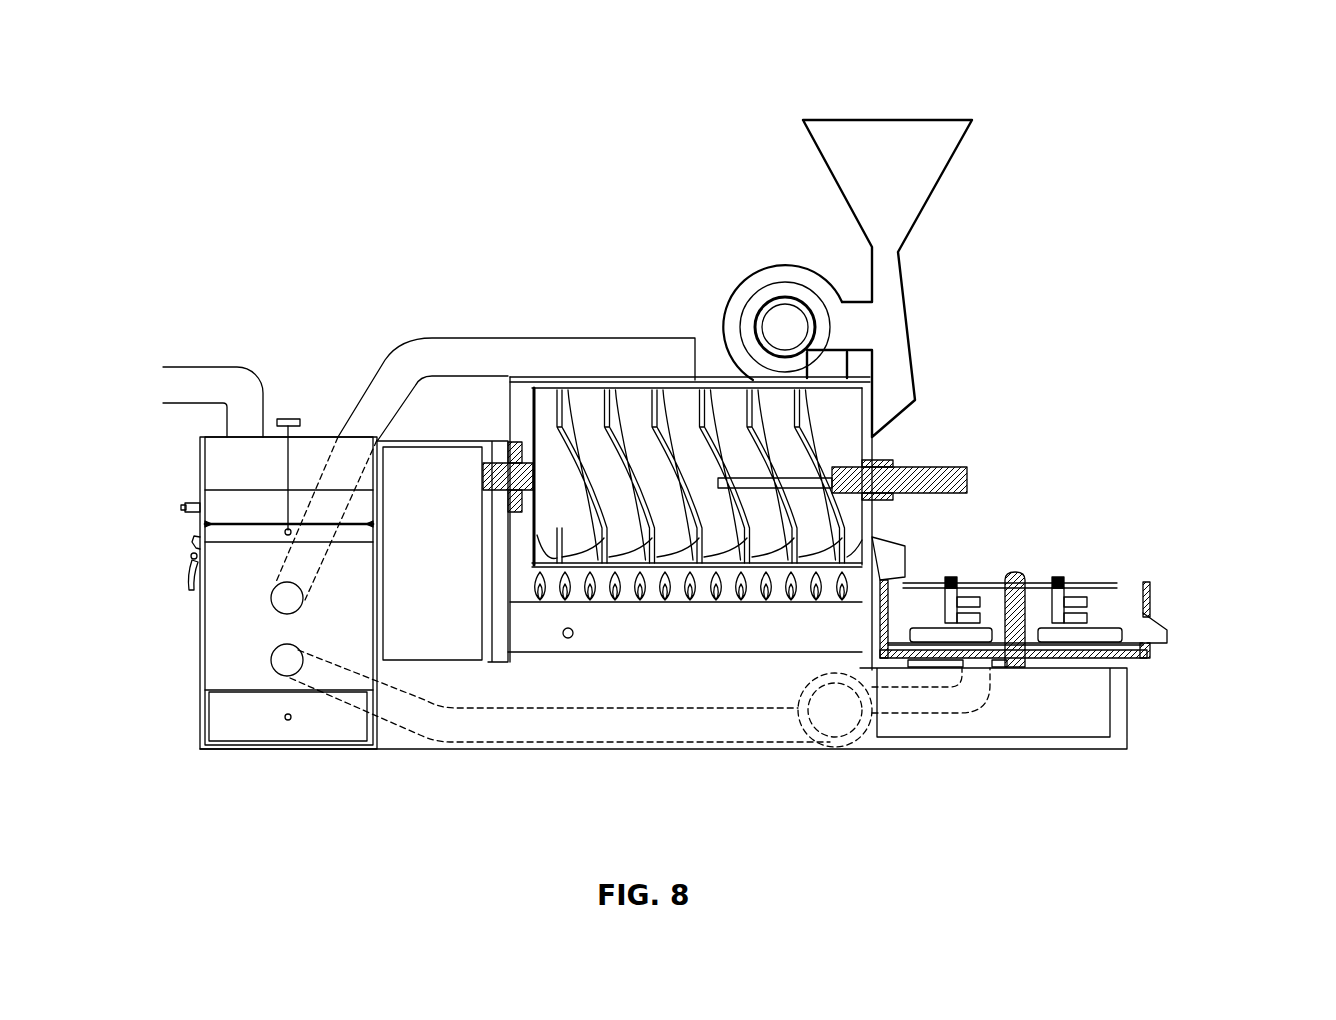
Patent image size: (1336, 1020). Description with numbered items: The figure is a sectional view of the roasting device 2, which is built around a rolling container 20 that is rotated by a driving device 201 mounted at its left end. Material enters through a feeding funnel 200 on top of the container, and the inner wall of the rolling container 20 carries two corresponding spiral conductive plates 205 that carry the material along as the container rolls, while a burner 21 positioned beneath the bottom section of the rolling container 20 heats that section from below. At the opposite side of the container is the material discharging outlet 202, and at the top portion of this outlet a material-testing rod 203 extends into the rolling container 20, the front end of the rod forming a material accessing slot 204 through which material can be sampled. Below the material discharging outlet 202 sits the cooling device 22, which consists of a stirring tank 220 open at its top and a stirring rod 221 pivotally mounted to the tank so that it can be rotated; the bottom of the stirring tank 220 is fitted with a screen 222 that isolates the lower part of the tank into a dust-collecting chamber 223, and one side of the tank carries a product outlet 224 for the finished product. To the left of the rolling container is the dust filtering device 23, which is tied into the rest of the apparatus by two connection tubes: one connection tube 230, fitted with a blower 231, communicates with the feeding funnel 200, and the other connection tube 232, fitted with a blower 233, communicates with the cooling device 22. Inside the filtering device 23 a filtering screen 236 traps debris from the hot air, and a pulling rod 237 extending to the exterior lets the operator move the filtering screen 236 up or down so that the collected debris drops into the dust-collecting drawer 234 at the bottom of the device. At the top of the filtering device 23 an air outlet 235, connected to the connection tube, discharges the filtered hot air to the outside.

The roasting device 2 is at (1163, 283).
The rolling container 20 is at (653, 400).
The feeding funnel 200 is at (855, 178).
The driving device 201 is at (442, 637).
The material discharging outlet 202 is at (867, 520).
The material-testing rod 203 is at (927, 473).
The material accessing slot 204 is at (728, 410).
The spiral conductive plates 205 is at (570, 410).
The burner 21 is at (635, 610).
The cooling device 22 is at (1160, 528).
The stirring tank 220 is at (1152, 583).
The stirring rod 221 is at (1063, 580).
The screen 222 is at (1127, 643).
The dust-collecting chamber 223 is at (1085, 648).
The product outlet 224 is at (1147, 628).
The dust filtering device 23 is at (155, 580).
The connection tube 230 is at (455, 352).
The blower 231 is at (757, 280).
The connection tube 232 is at (695, 733).
The blower 233 is at (837, 723).
The dust-collecting drawer 234 is at (260, 722).
The air outlet 235 is at (245, 415).
The filtering screen 236 is at (253, 523).
The pulling rod 237 is at (290, 415).